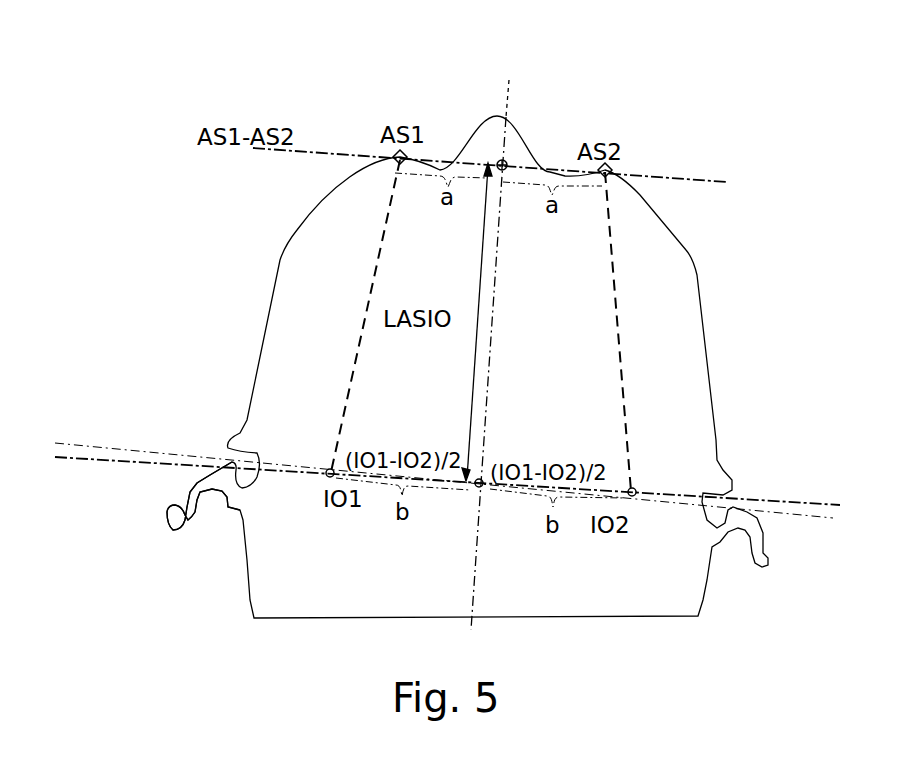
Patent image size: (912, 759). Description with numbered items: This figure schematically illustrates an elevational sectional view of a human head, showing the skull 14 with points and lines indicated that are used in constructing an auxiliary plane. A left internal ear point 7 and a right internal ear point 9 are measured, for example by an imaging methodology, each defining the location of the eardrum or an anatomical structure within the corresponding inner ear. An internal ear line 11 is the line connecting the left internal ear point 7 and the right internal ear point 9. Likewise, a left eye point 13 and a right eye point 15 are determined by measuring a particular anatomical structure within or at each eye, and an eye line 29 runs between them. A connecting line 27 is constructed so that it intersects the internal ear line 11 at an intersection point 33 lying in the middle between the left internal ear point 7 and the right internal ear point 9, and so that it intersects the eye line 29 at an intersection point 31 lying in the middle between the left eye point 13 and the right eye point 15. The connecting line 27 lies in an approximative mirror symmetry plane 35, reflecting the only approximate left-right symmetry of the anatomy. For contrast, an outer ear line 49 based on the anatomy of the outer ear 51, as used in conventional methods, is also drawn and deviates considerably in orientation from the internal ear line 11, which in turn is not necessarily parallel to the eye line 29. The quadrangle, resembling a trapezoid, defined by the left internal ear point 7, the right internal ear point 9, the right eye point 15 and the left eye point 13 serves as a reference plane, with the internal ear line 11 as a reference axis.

The left internal ear point 7 is at (328, 482).
The right internal ear point 9 is at (633, 497).
The internal ear line 11 is at (338, 467).
The left eye point 13 is at (394, 152).
The skull 14 is at (745, 318).
The right eye point 15 is at (612, 170).
The connecting line 27 is at (494, 268).
The eye line 29 is at (478, 162).
The intersection point 31 is at (508, 162).
The intersection point 33 is at (478, 492).
The approximative mirror symmetry plane 35 is at (511, 100).
The outer ear line 49 is at (830, 522).
The outer ear 51 is at (216, 431).